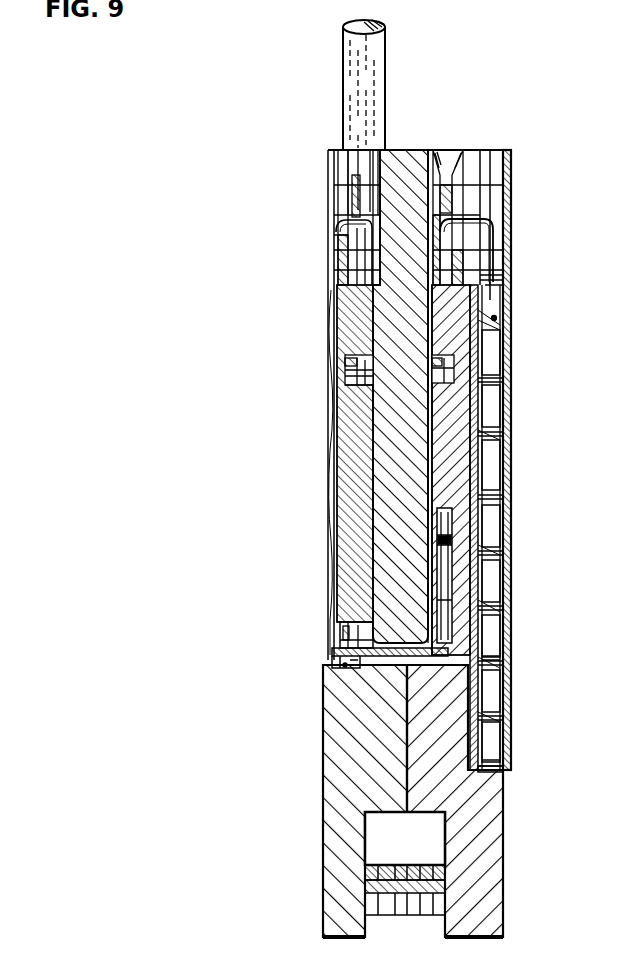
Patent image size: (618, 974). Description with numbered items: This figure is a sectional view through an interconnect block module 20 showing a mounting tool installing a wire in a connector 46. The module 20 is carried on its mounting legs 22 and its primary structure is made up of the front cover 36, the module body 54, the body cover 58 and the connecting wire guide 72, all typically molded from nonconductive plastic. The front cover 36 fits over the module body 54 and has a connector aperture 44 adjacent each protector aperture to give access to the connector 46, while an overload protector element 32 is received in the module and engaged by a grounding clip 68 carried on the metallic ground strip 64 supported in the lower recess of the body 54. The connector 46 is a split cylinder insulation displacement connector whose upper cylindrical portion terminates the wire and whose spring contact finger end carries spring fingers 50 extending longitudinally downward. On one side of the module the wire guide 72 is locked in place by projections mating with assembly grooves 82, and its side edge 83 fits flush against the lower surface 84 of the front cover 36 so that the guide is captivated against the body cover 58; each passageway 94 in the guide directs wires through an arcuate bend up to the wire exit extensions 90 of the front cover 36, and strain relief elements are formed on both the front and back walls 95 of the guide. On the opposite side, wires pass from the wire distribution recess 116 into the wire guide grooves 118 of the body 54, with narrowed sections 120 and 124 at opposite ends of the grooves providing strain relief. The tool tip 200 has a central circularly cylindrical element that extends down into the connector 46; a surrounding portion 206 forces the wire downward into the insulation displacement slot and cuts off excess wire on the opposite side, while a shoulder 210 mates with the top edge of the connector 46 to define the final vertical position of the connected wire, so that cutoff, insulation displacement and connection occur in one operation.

The interconnect block module 20 is at (311, 789).
The mounting legs 22 is at (506, 894).
The overload protector element 32 is at (393, 150).
The front cover 36 is at (513, 152).
The connector aperture 44 is at (441, 150).
The connector 46 is at (498, 242).
The spring fingers 50 is at (345, 366).
The module body 54 is at (326, 729).
The body cover 58 is at (505, 816).
The ground strip 64 is at (326, 702).
The grounding clips 68 is at (442, 608).
The connecting wire guide 72 is at (505, 656).
The assembly grooves 82 is at (506, 776).
The side edge 83 is at (510, 282).
The lower surface 84 is at (506, 275).
The wire exit extensions 90 is at (494, 198).
The passageway 94 is at (505, 436).
The front and back walls 95 is at (510, 554).
The wire distribution recess 116 is at (326, 688).
The wire guide grooves 118 is at (345, 381).
The narrowed section 120 is at (326, 650).
The narrowed section 124 is at (332, 262).
The tool tip 200 is at (348, 92).
The portion 206 is at (340, 220).
The shoulder 210 is at (352, 190).